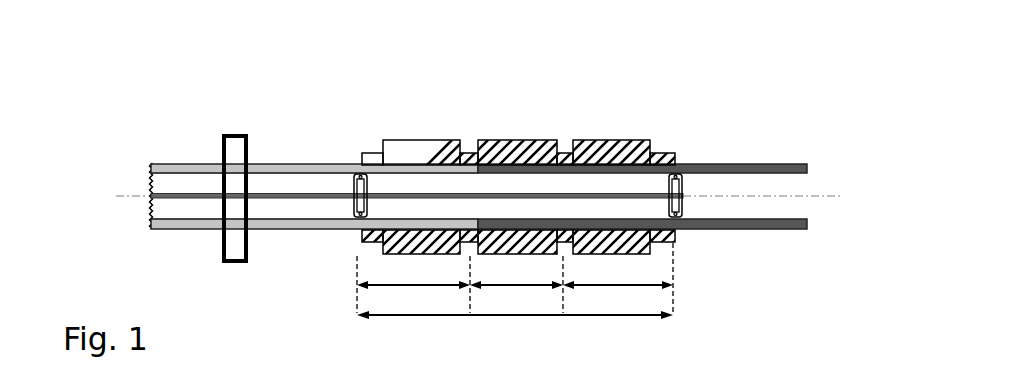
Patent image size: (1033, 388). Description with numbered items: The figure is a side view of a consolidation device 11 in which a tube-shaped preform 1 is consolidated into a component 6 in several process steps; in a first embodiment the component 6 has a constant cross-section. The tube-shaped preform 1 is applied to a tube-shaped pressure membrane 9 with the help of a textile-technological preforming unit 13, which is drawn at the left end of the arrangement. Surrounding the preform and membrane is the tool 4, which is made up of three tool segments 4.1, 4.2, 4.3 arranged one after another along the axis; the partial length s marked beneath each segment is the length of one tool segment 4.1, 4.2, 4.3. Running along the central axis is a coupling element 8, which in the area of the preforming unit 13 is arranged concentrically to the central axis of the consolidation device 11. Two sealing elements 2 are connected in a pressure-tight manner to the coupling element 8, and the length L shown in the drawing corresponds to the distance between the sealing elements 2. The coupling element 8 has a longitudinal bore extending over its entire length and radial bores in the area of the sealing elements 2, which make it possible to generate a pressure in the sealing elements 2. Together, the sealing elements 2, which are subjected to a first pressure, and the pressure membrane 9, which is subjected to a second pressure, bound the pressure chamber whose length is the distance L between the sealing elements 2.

The tube-shaped preform 1 is at (259, 170).
The sealing elements 2 is at (352, 187).
The tool 4 is at (571, 142).
The tool segment 4.1 is at (428, 143).
The tool segment 4.2 is at (559, 143).
The tool segment 4.3 is at (612, 143).
The component 6 is at (747, 168).
The coupling element 8 is at (606, 196).
The tube-shaped pressure membrane 9 is at (329, 178).
The consolidation device 11 is at (340, 261).
The textile-technological preforming unit 13 is at (228, 248).